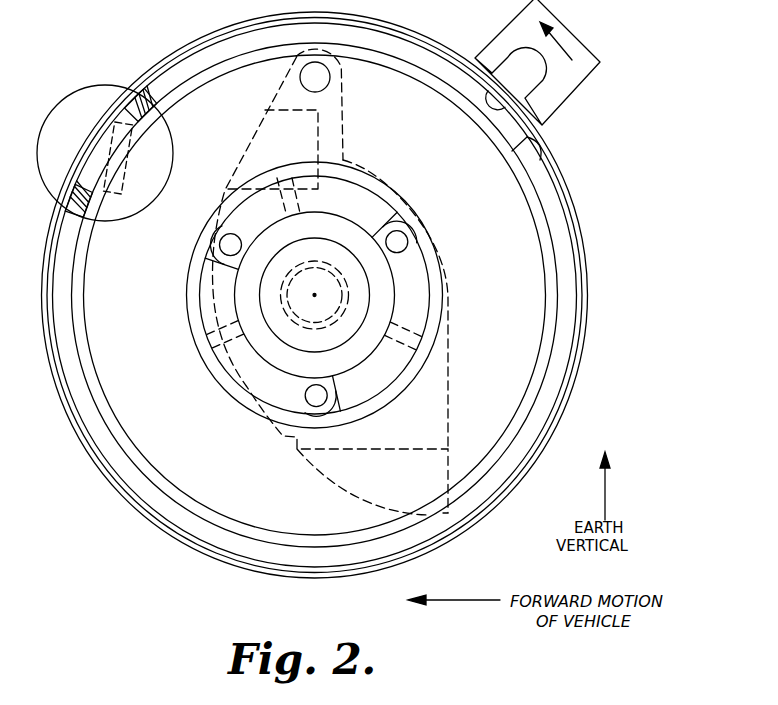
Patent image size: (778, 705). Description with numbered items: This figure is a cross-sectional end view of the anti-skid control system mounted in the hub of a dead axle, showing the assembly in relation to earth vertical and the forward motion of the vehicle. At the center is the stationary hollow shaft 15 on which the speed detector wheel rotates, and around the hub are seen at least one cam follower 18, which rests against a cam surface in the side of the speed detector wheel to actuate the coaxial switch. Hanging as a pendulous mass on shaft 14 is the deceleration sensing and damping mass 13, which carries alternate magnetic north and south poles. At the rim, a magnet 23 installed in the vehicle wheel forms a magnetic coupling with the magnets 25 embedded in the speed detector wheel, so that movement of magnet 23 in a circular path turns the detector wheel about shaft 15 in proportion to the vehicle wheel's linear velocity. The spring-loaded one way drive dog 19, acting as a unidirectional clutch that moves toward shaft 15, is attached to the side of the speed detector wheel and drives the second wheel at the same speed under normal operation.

The deceleration sensing and damping mass 13 is at (345, 130).
The shaft 14 is at (316, 76).
The stationary hollow shaft 15 is at (322, 296).
The cam follower 18 is at (229, 243).
The one way drive dog 19 is at (130, 117).
The magnet 23 is at (560, 99).
The magnets 25 is at (531, 143).